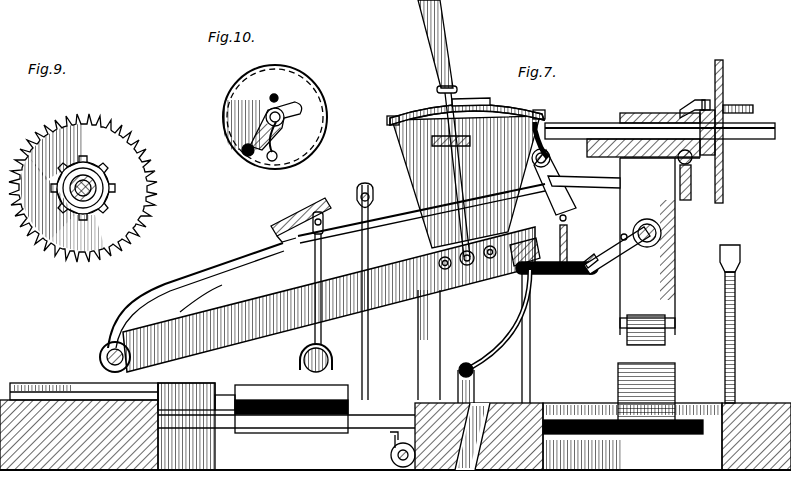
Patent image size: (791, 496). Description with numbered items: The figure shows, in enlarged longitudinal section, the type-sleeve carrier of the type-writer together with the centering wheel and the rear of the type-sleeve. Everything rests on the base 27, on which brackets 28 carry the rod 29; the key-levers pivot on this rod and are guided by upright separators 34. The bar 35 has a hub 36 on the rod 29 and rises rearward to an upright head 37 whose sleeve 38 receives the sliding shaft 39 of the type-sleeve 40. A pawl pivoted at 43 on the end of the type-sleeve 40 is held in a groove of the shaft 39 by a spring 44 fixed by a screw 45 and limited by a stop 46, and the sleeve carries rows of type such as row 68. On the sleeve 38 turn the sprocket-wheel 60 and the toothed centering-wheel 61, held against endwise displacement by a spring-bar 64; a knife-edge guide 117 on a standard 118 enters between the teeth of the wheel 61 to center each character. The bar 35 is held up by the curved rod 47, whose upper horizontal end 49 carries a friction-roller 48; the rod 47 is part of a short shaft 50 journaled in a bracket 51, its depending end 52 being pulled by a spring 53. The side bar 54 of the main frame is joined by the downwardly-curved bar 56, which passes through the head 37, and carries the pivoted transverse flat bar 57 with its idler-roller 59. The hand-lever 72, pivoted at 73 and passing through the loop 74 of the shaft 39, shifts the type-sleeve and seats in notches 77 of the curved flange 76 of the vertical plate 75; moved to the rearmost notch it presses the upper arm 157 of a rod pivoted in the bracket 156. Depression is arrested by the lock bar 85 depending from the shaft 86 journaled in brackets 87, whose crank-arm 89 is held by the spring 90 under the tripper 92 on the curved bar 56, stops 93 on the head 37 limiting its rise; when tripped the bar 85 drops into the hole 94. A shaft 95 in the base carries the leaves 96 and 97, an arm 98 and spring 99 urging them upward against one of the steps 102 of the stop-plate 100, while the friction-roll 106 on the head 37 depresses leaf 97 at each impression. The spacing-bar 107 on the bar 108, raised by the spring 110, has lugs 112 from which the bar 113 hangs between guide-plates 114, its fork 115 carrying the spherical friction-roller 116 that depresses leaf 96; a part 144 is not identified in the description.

In FIG. 7, the base 27 is at (108, 455).
In FIG. 7, the brackets 28 is at (52, 383).
In FIG. 7, the rod 29 is at (103, 350).
In FIG. 7, the upright separators 34 is at (425, 382).
In FIG. 7, the bar 35 is at (410, 292).
In FIG. 7, the hub 36 is at (95, 378).
In FIG. 7, the upright bar or head 37 is at (647, 246).
In FIG. 9, the sleeve 38 is at (72, 200).
In FIG. 7, the sleeve 38 is at (612, 116).
In FIG. 9, the shaft 39 is at (97, 188).
In FIG. 10, the shaft 39 is at (268, 117).
In FIG. 7, the shaft 39 is at (582, 126).
In FIG. 10, the type-sleeve 40 is at (298, 82).
In FIG. 10, the pivot 43 is at (249, 157).
In FIG. 10, the spring 44 is at (280, 126).
In FIG. 10, the screw 45 is at (273, 161).
In FIG. 10, the stop 46 is at (275, 140).
In FIG. 7, the curved rod 47 is at (538, 332).
In FIG. 7, the friction-roller 48 is at (585, 275).
In FIG. 7, the upper horizontal end 49 is at (529, 235).
In FIG. 7, the short shaft 50 is at (480, 358).
In FIG. 7, the bracket 51 is at (458, 372).
In FIG. 7, the downwardly-depending end 52 is at (478, 386).
In FIG. 7, the spring 53 is at (643, 436).
In FIG. 7, the side bar 54 is at (383, 232).
In FIG. 7, the downwardly-curved bar 56 is at (662, 236).
In FIG. 7, the transverse flat bar 57 is at (692, 182).
In FIG. 7, the idler-roller 59 is at (678, 163).
In FIG. 9, the sprocket-wheel 60 is at (83, 196).
In FIG. 7, the sprocket-wheel 60 is at (706, 98).
In FIG. 9, the centering-wheel 61 is at (132, 150).
In FIG. 7, the centering-wheel 61 is at (724, 82).
In FIG. 10, the spring-bar 64 is at (279, 98).
In FIG. 7, the spring-bar 64 is at (690, 108).
In FIG. 10, the row of type 68 is at (238, 90).
In FIG. 7, the hand-lever 72 is at (445, 55).
In FIG. 7, the pivot 73 is at (466, 268).
In FIG. 7, the loop or ring 74 is at (440, 148).
In FIG. 7, the vertical plate 75 is at (416, 148).
In FIG. 7, the curved flange 76 is at (470, 99).
In FIG. 7, the notches 77 is at (397, 116).
In FIG. 7, the stop-bar or lock 85 is at (530, 382).
In FIG. 7, the horizontal bar or shaft 86 is at (520, 276).
In FIG. 7, the brackets 87 is at (516, 262).
In FIG. 7, the crank-arm 89 is at (597, 277).
In FIG. 7, the spring 90 is at (568, 240).
In FIG. 7, the tripper 92 is at (616, 258).
In FIG. 7, the stops 93 is at (624, 233).
In FIG. 7, the hole 94 is at (484, 460).
In FIG. 7, the rod or shaft 95 is at (440, 426).
In FIG. 7, the plate or leaf 96 is at (305, 420).
In FIG. 7, the plate or leaf 97 is at (672, 384).
In FIG. 7, the downwardly-projecting arm 98 is at (392, 438).
In FIG. 7, the spring 99 is at (395, 463).
In FIG. 7, the stop-plate 100 is at (187, 385).
In FIG. 7, the steps 102 is at (226, 393).
In FIG. 7, the friction-roll 106 is at (665, 345).
In FIG. 7, the spacing-bar 107 is at (295, 212).
In FIG. 7, the bar 108 is at (195, 272).
In FIG. 7, the spring 110 is at (204, 289).
In FIG. 7, the lugs 112 is at (358, 195).
In FIG. 7, the bar 113 is at (314, 330).
In FIG. 7, the guide-plates 114 is at (313, 246).
In FIG. 7, the fork 115 is at (330, 350).
In FIG. 7, the spherical friction-roller 116 is at (300, 376).
In FIG. 7, the knife-edge guide 117 is at (740, 258).
In FIG. 7, the standard 118 is at (735, 343).
In FIG. 7, the rod 144 is at (368, 326).
In FIG. 7, the bracket 156 is at (558, 159).
In FIG. 7, the upper arm 157 is at (530, 116).